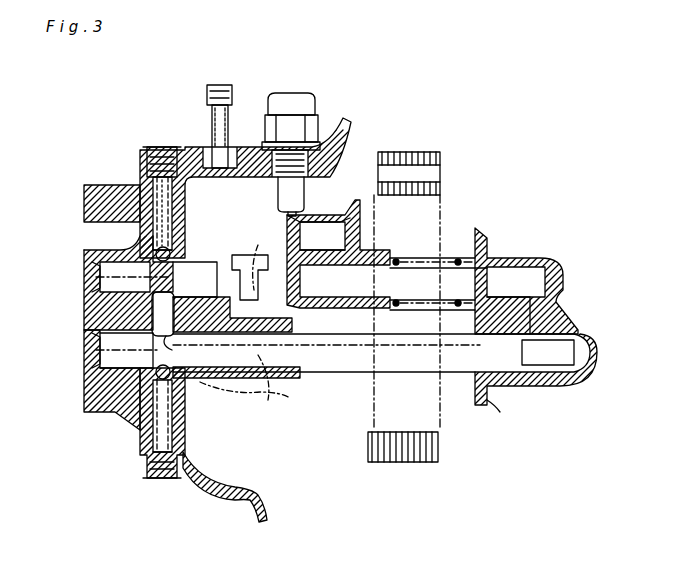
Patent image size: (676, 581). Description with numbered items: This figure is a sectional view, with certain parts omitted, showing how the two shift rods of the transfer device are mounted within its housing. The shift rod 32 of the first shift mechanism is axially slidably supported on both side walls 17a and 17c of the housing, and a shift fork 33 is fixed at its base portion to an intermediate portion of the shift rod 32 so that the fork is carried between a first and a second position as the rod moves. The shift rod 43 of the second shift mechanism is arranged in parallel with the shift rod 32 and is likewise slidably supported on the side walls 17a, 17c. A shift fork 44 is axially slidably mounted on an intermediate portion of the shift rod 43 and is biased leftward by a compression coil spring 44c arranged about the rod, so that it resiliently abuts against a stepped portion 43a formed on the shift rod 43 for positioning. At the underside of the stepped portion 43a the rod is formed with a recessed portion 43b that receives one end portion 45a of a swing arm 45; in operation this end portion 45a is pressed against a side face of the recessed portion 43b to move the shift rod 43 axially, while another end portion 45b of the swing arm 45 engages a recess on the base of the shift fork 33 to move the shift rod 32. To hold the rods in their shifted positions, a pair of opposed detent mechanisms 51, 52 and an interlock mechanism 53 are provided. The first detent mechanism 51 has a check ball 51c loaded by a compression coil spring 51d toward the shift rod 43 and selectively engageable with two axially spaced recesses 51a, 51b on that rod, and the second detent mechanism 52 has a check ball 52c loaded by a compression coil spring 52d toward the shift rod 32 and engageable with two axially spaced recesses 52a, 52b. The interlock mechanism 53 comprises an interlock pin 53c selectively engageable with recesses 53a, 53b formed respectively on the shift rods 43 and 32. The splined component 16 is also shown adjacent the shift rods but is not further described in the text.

The gear 16 is at (410, 156).
The side wall 17a is at (218, 490).
The side wall 17c is at (495, 405).
The shift rod 32 is at (400, 360).
The shift fork 33 is at (280, 398).
The shift rod 43 is at (500, 262).
The stepped portion 43a is at (322, 240).
The recessed portion 43b is at (258, 244).
The shift fork 44 is at (360, 236).
The compression coil spring 44c is at (420, 250).
The swing arm 45 is at (298, 320).
The one end portion 45a is at (302, 222).
The another end portion 45b is at (245, 396).
The first detent mechanism 51 is at (176, 258).
The recess 51a is at (338, 330).
The recess 51b is at (262, 250).
The check ball 51c is at (174, 236).
The compression coil spring 51d is at (137, 178).
The second detent mechanism 52 is at (150, 442).
The recess 52a is at (178, 392).
The recess 52b is at (105, 380).
The check ball 52c is at (186, 428).
The compression coil spring 52d is at (140, 445).
The interlock mechanism 53 is at (150, 312).
The recess 53a is at (168, 296).
The recess 53b is at (174, 340).
The interlock pin 53c is at (176, 314).